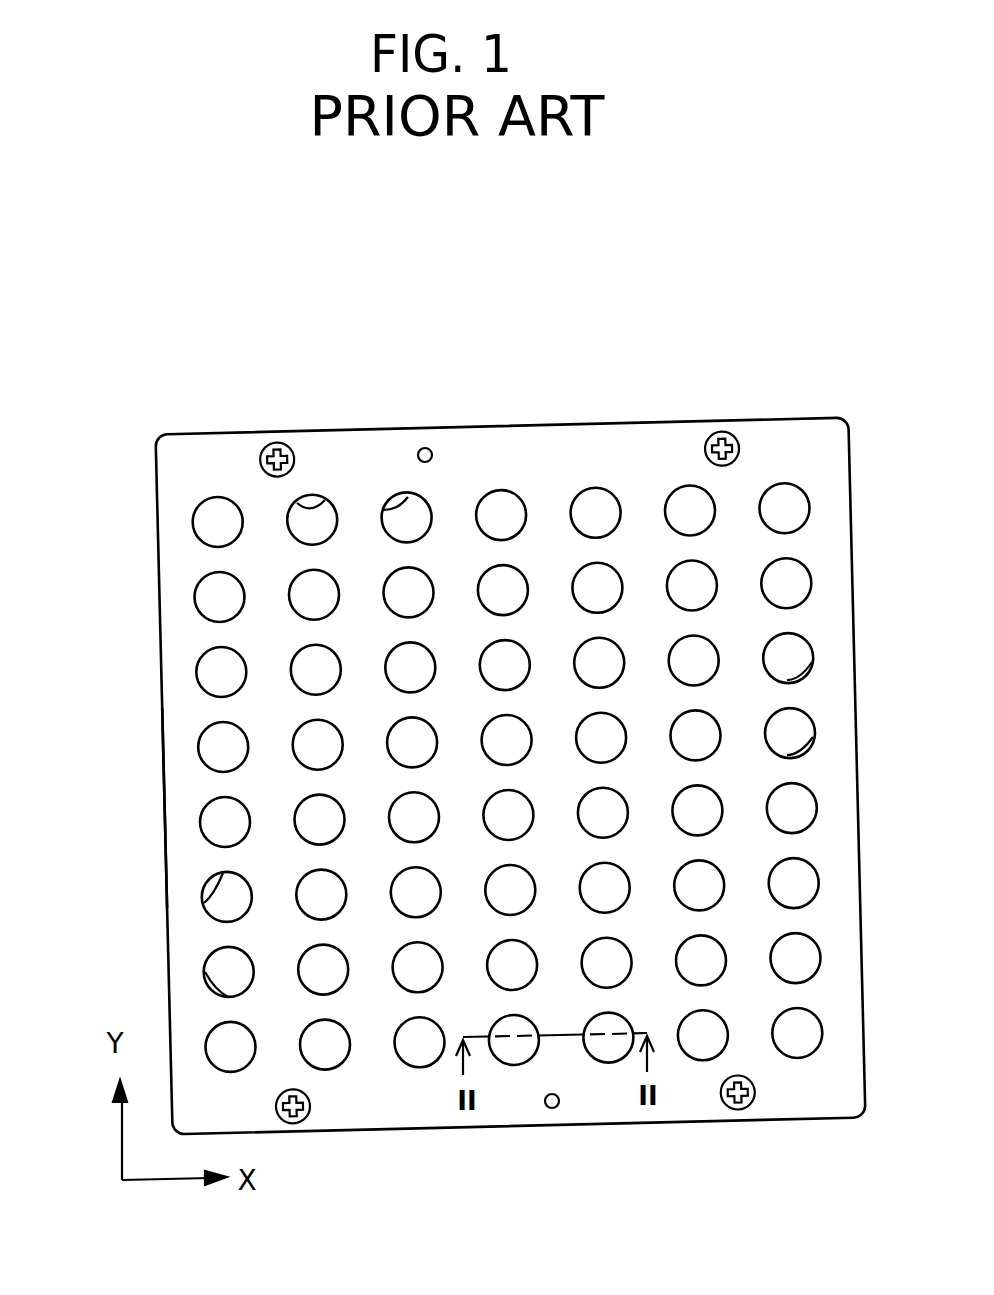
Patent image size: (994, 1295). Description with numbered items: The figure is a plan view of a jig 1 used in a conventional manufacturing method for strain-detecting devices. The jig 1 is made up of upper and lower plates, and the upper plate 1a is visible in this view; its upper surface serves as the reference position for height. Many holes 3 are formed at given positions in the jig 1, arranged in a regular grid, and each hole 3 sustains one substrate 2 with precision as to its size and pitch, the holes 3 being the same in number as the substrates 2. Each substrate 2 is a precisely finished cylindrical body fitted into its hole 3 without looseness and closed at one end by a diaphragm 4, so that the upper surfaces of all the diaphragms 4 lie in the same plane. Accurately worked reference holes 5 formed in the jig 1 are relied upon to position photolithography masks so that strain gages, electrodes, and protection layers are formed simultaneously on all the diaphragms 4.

The jig 1 is at (583, 422).
The upper plate 1a is at (165, 833).
The substrate 2 is at (426, 502).
The hole 3 is at (392, 497).
The diaphragm 4 is at (596, 512).
The reference hole 5 is at (422, 447).